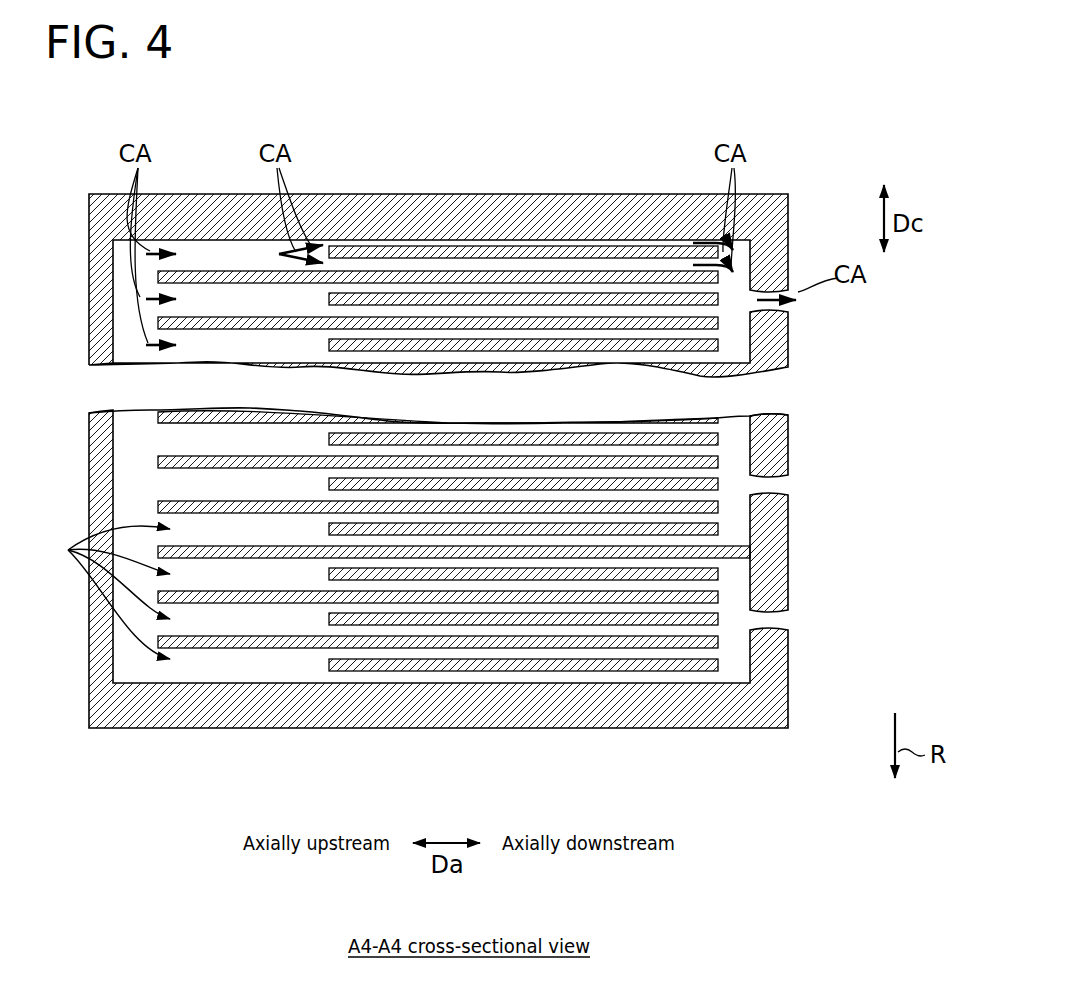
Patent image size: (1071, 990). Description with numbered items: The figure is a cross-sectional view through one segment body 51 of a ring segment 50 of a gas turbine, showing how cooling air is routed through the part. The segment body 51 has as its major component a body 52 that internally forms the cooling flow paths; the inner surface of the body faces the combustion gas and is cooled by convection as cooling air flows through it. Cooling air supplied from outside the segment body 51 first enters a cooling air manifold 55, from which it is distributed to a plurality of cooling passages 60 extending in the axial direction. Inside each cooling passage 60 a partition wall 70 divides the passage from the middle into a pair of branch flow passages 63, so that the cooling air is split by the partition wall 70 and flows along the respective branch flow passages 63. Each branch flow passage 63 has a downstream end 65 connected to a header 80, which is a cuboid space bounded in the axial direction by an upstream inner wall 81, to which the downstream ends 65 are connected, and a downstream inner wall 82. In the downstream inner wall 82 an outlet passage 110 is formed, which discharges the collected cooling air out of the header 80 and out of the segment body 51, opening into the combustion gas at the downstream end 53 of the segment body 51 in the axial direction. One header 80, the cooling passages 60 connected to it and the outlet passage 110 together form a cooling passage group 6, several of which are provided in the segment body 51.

The ring segment 50 is at (475, 234).
The segment body 51 is at (475, 234).
The body 52 is at (326, 195).
The downstream end 53 is at (789, 225).
The cooling air manifold 55 is at (127, 472).
The cooling passage 60 is at (235, 250).
The branch flow passage 63 is at (480, 268).
The downstream end 65 is at (700, 604).
The partition wall 70 is at (427, 242).
The header 80 is at (742, 342).
The upstream inner wall 81 is at (718, 571).
The downstream inner wall 82 is at (745, 659).
The outlet passage 110 is at (757, 288).
The cooling passage group 6 is at (818, 323).